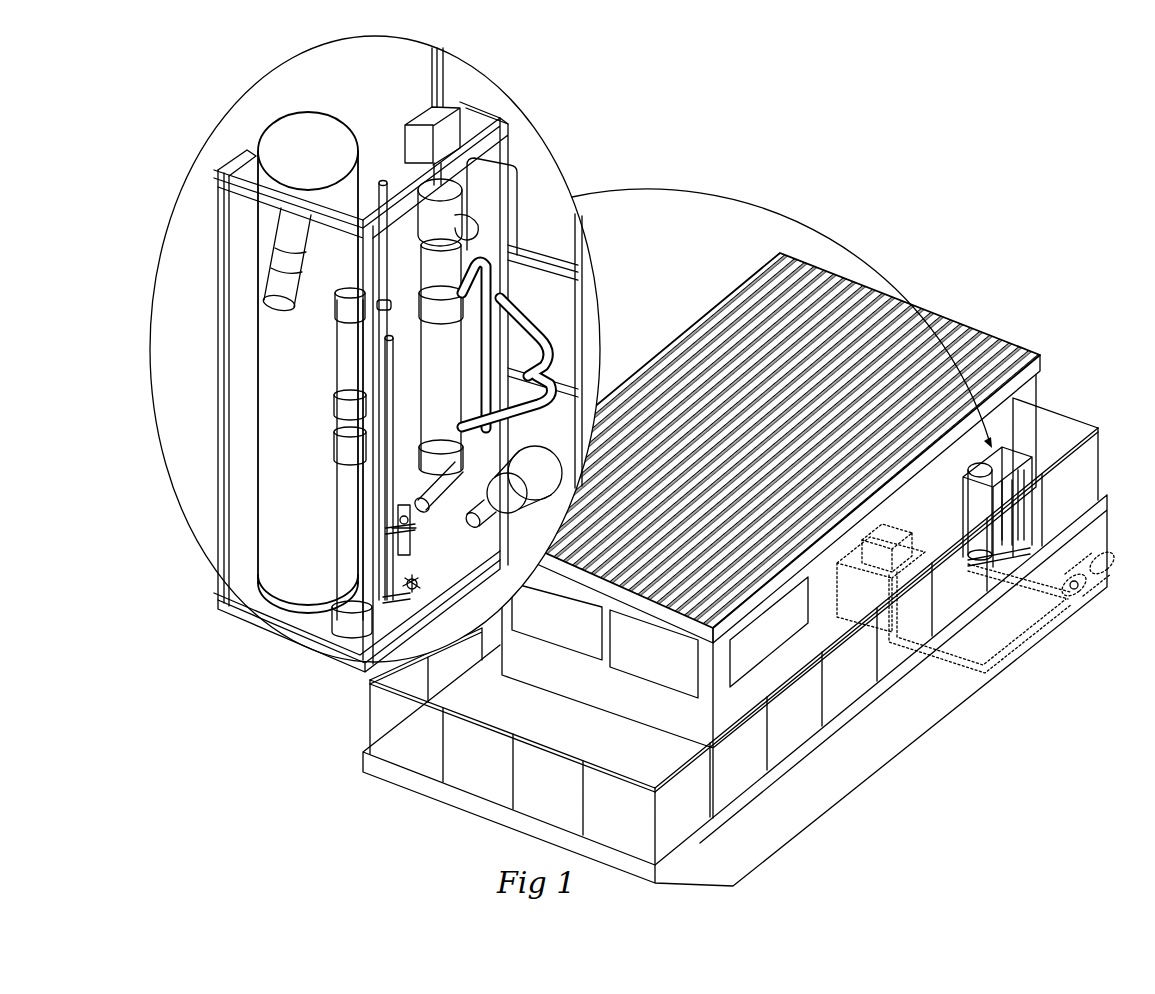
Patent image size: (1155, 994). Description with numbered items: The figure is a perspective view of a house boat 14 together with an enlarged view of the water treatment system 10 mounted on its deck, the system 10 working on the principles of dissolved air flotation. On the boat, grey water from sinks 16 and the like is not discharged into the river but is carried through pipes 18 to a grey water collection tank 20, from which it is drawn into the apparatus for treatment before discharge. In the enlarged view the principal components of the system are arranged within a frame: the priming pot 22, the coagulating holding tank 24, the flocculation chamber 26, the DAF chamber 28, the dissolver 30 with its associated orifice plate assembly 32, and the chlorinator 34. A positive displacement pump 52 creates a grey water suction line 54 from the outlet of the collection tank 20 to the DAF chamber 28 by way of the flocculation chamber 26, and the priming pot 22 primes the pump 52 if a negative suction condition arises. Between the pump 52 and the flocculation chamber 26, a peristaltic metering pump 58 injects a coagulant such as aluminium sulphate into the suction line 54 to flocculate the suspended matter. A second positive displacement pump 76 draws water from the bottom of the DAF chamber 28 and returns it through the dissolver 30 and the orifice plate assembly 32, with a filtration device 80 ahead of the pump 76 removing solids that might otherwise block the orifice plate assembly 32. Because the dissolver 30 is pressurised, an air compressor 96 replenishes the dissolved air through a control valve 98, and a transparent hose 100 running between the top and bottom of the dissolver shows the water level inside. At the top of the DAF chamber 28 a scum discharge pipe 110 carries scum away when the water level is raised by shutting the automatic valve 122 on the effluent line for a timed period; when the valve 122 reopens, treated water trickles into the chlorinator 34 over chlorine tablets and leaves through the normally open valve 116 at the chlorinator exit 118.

The water treatment system 10 is at (1022, 440).
The house boat 14 is at (900, 755).
The sink 16 is at (896, 533).
The pipe 18 is at (965, 668).
The grey water collection tank 20 is at (1085, 590).
The priming pot 22 is at (462, 368).
The coagulating holding tank 24 is at (518, 215).
The flocculation chamber 26 is at (380, 322).
The DAF chamber 28 is at (280, 580).
The dissolver 30 is at (440, 418).
The orifice plate assembly 32 is at (418, 508).
The chlorinator 34 is at (327, 582).
The positive displacement pump 52 is at (492, 360).
The grey water suction line 54 is at (580, 362).
The peristaltic metering pump 58 is at (460, 108).
The second positive displacement pump 76 is at (533, 448).
The filtration device 80 is at (470, 527).
The air compressor 96 is at (392, 178).
The control valve 98 is at (462, 222).
The transparent hose 100 is at (412, 330).
The scum discharge pipe 110 is at (280, 306).
The valve 116 is at (418, 583).
The chlorinator exit 118 is at (408, 597).
The automatic valve 122 is at (390, 305).